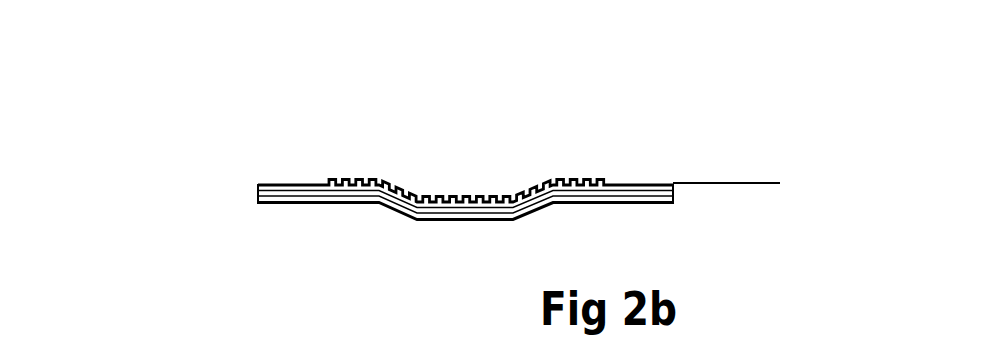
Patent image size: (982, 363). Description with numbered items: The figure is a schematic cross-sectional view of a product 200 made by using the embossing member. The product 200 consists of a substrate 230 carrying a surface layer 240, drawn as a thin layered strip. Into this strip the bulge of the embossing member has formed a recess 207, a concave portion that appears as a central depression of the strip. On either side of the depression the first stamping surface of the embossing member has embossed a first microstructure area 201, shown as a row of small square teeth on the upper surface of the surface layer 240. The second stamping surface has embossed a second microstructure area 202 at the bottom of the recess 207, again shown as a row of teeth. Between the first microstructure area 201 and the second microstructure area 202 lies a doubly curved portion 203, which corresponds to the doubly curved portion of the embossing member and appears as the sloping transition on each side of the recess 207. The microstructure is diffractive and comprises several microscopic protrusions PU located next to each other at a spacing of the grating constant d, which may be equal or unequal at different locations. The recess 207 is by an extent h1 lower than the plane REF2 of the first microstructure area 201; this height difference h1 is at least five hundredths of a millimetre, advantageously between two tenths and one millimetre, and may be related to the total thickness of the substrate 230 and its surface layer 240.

The product 200 is at (181, 204).
The first microstructure area 201 is at (320, 185).
The second microstructure area 202 is at (510, 123).
The doubly curved portion 203 is at (417, 201).
The recess 207 is at (547, 227).
The substrate 230 is at (257, 200).
The surface layer 240 is at (257, 190).
The microscopic protrusion PU is at (600, 184).
The grating constant d is at (565, 140).
The height difference h1 is at (731, 215).
The plane of the first microstructure area REF2 is at (780, 183).